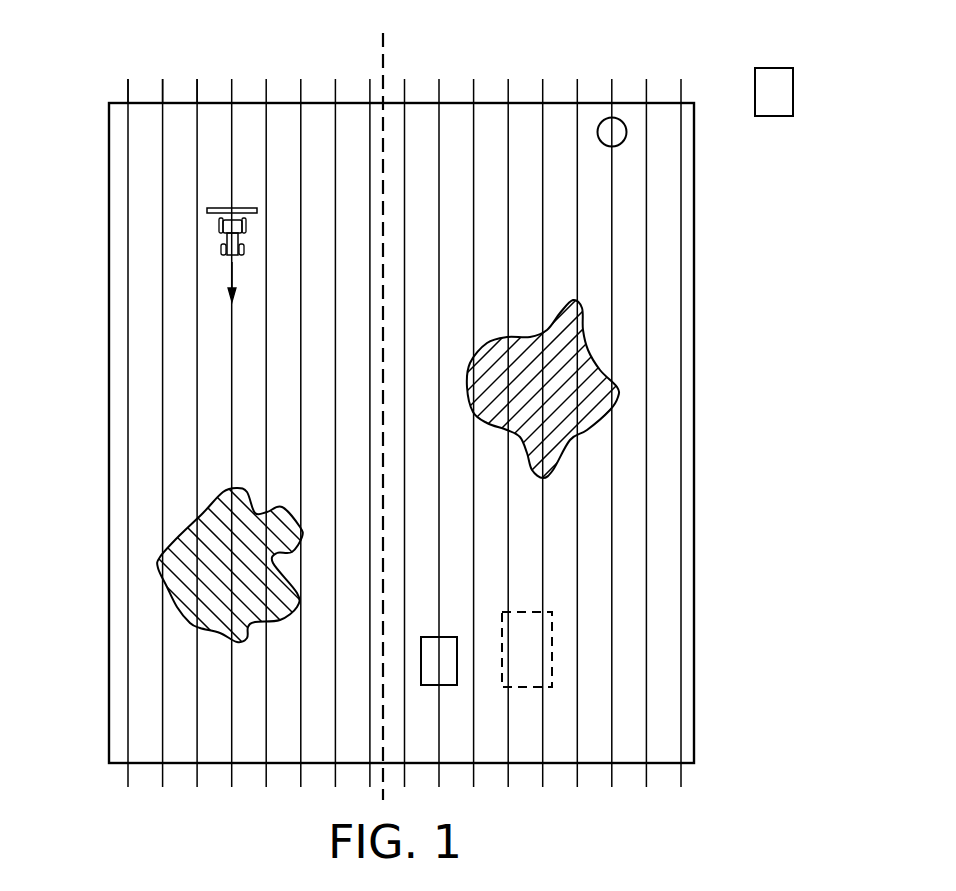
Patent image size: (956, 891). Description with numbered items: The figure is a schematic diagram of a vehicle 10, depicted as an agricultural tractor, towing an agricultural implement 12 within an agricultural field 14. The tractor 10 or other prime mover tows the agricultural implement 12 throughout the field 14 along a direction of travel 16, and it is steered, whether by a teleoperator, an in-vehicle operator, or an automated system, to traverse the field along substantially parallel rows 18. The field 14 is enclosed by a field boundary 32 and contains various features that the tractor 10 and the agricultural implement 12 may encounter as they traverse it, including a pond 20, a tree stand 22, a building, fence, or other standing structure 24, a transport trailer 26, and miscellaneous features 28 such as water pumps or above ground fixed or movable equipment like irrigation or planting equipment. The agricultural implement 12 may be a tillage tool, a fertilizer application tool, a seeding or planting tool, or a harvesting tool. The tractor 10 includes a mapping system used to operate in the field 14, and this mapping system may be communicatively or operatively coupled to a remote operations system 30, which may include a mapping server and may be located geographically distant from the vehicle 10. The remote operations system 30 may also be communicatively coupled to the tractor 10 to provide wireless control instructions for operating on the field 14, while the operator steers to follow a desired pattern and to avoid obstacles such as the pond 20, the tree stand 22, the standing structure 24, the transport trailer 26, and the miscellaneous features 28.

The vehicle 10 is at (230, 240).
The agricultural implement 12 is at (235, 208).
The agricultural field 14 is at (660, 248).
The direction of travel 16 is at (230, 277).
The substantially parallel rows 18 is at (197, 93).
The pond 20 is at (245, 488).
The tree stand 22 is at (467, 397).
The standing structure 24 is at (443, 685).
The transport trailer 26 is at (516, 687).
The miscellaneous features 28 is at (602, 122).
The remote operations system 30 is at (771, 68).
The field boundary 32 is at (283, 103).